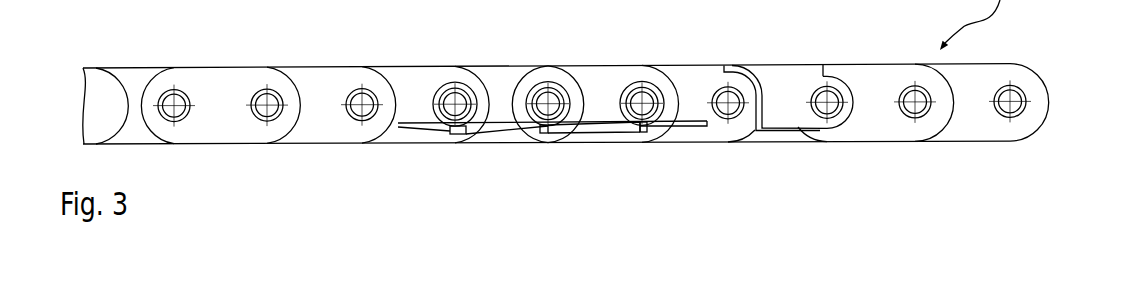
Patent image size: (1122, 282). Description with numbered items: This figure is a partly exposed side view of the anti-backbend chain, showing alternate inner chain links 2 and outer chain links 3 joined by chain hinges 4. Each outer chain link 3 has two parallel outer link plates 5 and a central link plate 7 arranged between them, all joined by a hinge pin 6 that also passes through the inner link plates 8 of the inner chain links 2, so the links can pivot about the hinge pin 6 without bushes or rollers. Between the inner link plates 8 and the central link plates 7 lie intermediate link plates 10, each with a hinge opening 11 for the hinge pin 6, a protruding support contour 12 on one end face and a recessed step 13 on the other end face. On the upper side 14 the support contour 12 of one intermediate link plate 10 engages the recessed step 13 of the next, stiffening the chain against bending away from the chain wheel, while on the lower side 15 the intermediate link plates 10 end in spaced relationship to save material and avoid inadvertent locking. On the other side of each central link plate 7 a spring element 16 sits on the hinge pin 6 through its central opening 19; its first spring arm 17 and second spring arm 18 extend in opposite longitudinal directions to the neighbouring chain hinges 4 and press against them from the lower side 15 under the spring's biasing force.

The inner chain link 2 is at (321, 88).
The outer chain link 3 is at (216, 88).
The chain hinge 4 is at (157, 85).
The outer link plate 5 is at (213, 118).
The hinge pin 6 is at (172, 113).
The central link plate 7 is at (613, 122).
The inner link plate 8 is at (320, 116).
The intermediate link plate 10 is at (785, 120).
The hinge opening 11 is at (843, 114).
The protruding support contour 12 is at (737, 70).
The recessed step 13 is at (724, 64).
The upper side 14 is at (462, 58).
The lower side 15 is at (463, 135).
The spring element 16 is at (670, 106).
The first spring arm 17 is at (410, 124).
The second spring arm 18 is at (483, 128).
The central opening 19 is at (646, 118).